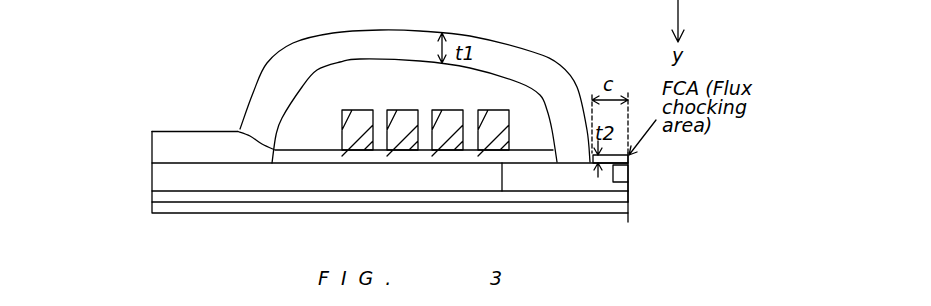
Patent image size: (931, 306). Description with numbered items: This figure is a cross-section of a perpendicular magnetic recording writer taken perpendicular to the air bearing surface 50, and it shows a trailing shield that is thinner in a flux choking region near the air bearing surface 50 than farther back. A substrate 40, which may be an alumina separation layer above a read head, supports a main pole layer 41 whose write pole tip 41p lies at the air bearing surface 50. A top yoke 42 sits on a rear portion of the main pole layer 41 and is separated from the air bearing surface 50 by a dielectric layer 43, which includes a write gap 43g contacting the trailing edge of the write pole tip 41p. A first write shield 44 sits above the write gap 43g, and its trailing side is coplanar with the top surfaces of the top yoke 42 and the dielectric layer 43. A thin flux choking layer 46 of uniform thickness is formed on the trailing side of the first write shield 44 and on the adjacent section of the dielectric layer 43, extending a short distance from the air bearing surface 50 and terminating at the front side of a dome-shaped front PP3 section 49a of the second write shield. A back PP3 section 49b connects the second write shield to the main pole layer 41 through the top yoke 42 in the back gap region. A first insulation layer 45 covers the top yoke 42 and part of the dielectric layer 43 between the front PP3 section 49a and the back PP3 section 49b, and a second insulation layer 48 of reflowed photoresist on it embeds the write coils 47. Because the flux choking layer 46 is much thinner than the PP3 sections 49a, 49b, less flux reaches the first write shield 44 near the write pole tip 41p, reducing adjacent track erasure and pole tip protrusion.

The substrate 40 is at (152, 208).
The main pole layer 41 is at (152, 196).
The write pole tip 41p is at (628, 197).
The top yoke 42 is at (152, 178).
The dielectric layer 43 is at (548, 182).
The write gap 43g is at (628, 185).
The first write shield 44 is at (628, 173).
The first insulation layer 45 is at (240, 130).
The flux choking layer 46 is at (628, 157).
The write coils 47 is at (400, 125).
The second insulation layer 48 is at (353, 72).
The front PP3 section 49a is at (556, 67).
The back PP3 section 49b is at (152, 143).
The air bearing surface 50 is at (628, 114).